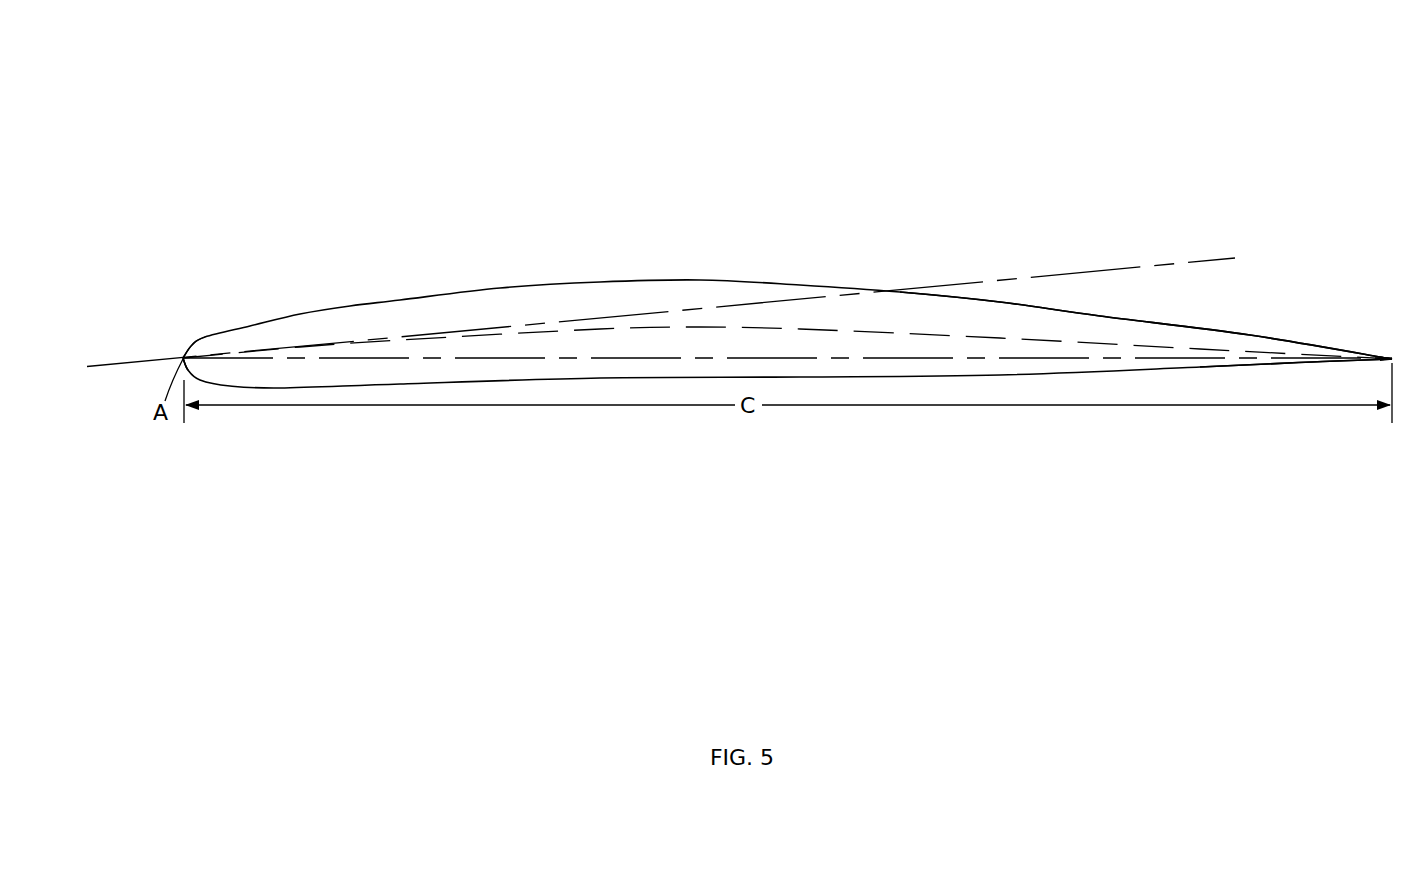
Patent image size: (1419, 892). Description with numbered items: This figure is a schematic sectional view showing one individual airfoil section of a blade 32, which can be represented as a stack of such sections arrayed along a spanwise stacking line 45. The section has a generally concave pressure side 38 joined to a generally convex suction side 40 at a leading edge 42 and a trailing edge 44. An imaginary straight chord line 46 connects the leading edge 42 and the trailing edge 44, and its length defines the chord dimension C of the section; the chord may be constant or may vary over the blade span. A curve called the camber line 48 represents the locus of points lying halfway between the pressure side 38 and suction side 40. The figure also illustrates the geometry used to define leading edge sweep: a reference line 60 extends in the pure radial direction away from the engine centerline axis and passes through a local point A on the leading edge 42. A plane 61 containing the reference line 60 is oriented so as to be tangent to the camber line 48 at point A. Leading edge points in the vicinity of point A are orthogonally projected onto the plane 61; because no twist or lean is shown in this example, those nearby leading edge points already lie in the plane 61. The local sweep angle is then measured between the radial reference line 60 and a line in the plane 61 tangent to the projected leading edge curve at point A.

The blade 32 is at (796, 146).
The pressure side 38 is at (1312, 364).
The suction side 40 is at (1332, 349).
The leading edge 42 is at (168, 364).
The trailing edge 44 is at (1393, 358).
The spanwise stacking line 45 is at (658, 328).
The chord line 46 is at (545, 360).
The camber line 48 is at (1226, 335).
The reference line 60 is at (183, 358).
The plane 61 is at (1077, 275).